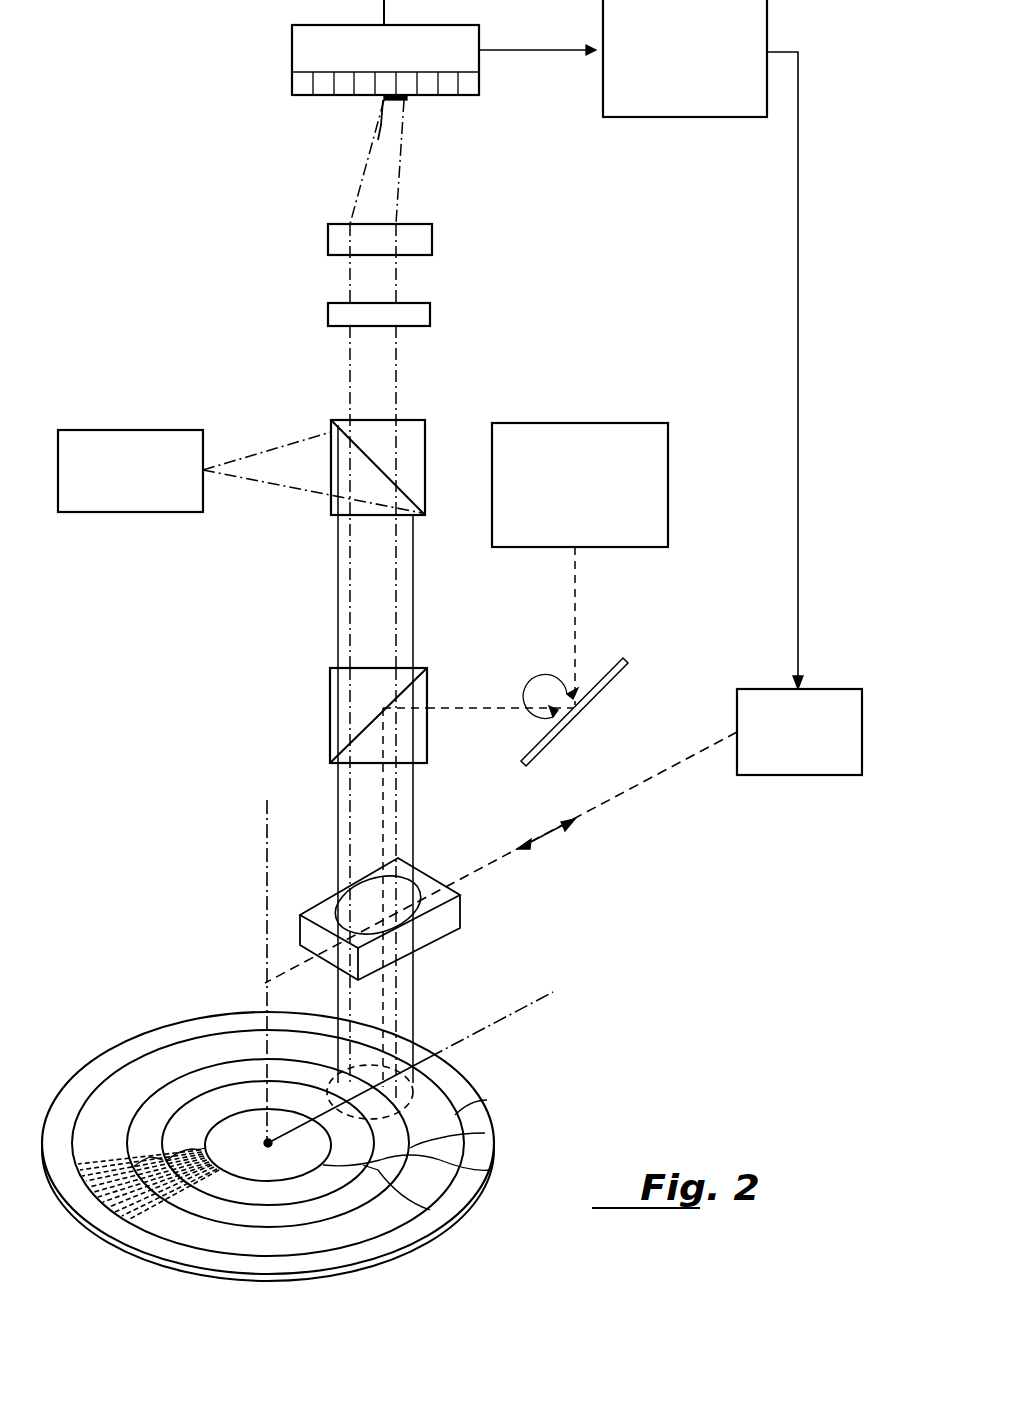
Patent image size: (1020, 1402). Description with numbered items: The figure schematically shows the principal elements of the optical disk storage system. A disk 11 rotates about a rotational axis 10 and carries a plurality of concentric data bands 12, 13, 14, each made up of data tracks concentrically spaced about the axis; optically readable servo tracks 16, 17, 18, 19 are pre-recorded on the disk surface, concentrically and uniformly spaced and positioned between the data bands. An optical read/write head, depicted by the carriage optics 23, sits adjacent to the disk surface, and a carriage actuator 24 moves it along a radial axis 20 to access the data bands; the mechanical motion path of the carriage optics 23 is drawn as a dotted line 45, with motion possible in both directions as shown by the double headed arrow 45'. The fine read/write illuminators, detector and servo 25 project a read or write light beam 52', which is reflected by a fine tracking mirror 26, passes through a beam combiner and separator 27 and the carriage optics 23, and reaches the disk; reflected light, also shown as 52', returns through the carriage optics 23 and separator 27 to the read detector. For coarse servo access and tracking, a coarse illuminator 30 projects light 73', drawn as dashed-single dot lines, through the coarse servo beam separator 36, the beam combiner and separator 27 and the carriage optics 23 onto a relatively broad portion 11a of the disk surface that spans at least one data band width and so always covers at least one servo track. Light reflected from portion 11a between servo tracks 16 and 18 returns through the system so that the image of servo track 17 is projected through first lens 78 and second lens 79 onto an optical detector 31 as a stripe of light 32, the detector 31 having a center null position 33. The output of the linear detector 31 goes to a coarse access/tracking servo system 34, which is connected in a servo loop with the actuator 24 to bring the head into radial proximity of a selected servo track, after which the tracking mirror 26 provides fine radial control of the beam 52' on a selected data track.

The optical detector 31 is at (293, 48).
The stripe of light 32 is at (393, 100).
The center null position 33 is at (383, 104).
The coarse access/tracking servo system 34 is at (652, 100).
The second lens 79 is at (340, 237).
The first lens 78 is at (332, 316).
The light 73' is at (336, 762).
The coarse servo beam separator 36 is at (427, 445).
The coarse illuminator 30 is at (82, 442).
The fine read/write illuminators, detector and servo 25 is at (657, 497).
The read or write light beam 52' is at (434, 817).
The fine tracking mirror 26 is at (627, 677).
The beam combiner and separator 27 is at (330, 708).
The carriage actuator 24 is at (808, 765).
The mechanical motion path 45 is at (501, 857).
The double headed arrow 45' is at (556, 859).
The rotational axis 10 is at (265, 857).
The carriage optics 23 is at (462, 898).
The radial axis 20 is at (550, 993).
The disk 11 is at (108, 1058).
The illuminated portion of the disk surface 11a is at (412, 1094).
The data band 12 is at (127, 1165).
The data band 13 is at (150, 1158).
The data band 14 is at (192, 1150).
The servo track 16 is at (487, 1100).
The servo track 17 is at (485, 1133).
The servo track 18 is at (490, 1170).
The servo track 19 is at (430, 1210).